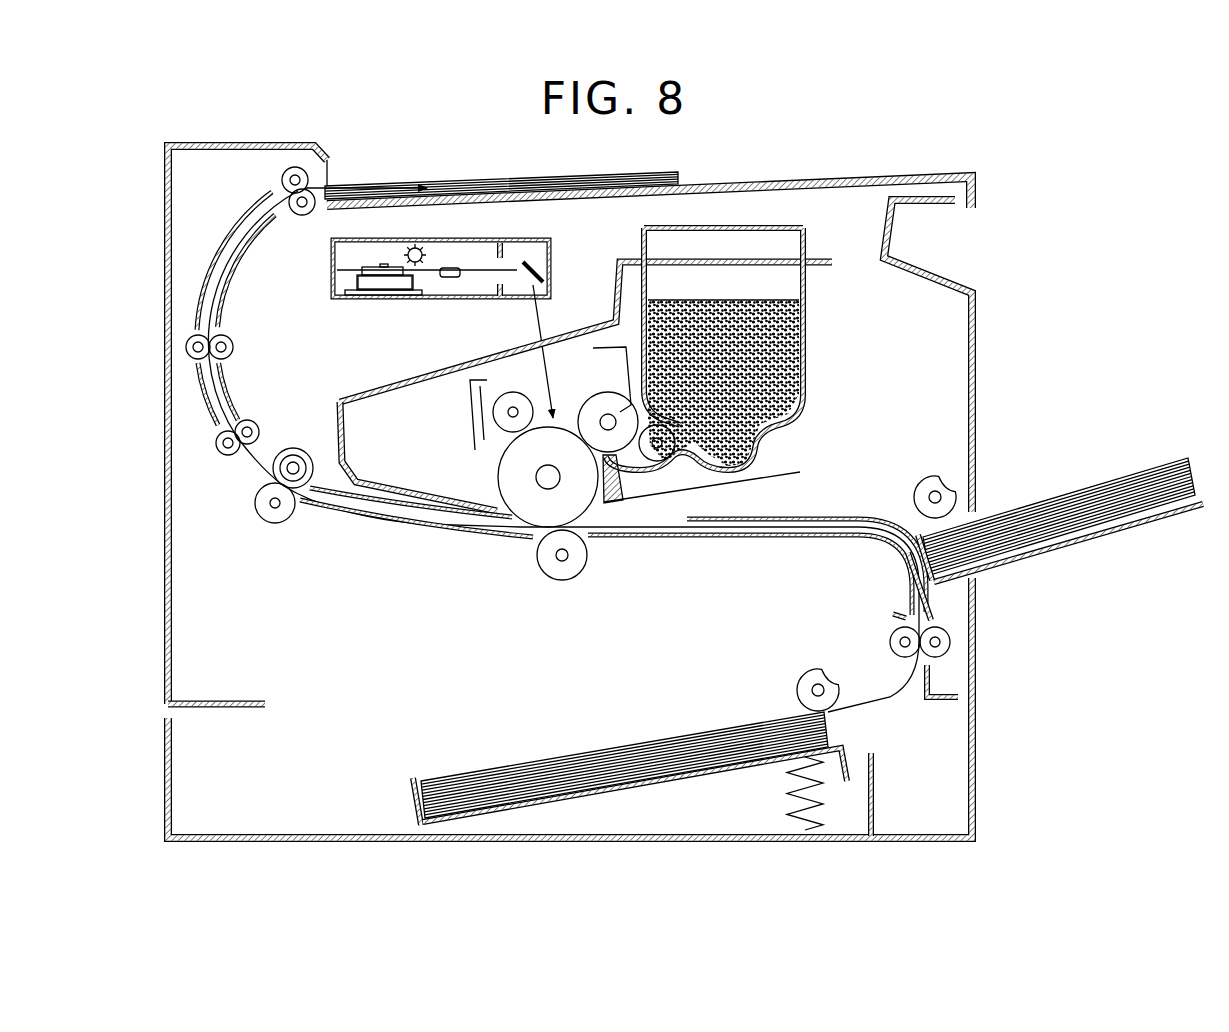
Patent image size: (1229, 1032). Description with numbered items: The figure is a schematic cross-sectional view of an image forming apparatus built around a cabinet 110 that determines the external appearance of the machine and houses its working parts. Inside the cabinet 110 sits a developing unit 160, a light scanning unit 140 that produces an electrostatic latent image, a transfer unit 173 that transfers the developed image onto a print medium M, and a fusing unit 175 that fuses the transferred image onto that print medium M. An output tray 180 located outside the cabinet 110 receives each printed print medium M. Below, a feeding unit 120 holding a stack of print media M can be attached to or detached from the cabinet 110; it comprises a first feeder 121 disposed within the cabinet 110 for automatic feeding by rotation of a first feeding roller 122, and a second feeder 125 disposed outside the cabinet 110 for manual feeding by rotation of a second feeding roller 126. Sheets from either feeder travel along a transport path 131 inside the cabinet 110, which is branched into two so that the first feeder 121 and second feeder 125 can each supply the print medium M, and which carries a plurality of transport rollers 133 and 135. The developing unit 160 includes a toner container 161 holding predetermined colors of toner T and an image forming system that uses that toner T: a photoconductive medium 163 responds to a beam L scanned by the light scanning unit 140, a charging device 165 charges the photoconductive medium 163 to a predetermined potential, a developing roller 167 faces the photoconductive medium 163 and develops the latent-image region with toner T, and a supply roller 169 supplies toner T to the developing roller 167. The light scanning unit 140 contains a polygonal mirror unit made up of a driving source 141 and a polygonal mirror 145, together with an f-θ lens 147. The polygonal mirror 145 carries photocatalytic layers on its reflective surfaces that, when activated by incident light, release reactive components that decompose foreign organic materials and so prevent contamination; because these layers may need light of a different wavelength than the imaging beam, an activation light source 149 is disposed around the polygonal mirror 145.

The cabinet 110 is at (976, 326).
The output tray 180 is at (858, 176).
The light scanning unit 140 is at (404, 266).
The driving source 141 is at (385, 290).
The polygonal mirror 145 is at (357, 270).
The f-θ lens 147 is at (446, 280).
The activation light source 149 is at (418, 249).
The beam L is at (533, 323).
The developing unit 160 is at (622, 369).
The toner container 161 is at (808, 294).
The toner T is at (782, 333).
The photoconductive medium 163 is at (523, 505).
The charging device 165 is at (518, 402).
The developing roller 167 is at (603, 405).
The supply roller 169 is at (659, 462).
The transfer unit 173 is at (555, 572).
The fusing unit 175 is at (297, 448).
The transport path 131 is at (212, 405).
The transport roller 133 is at (889, 642).
The transport roller 135 is at (300, 216).
The feeding unit 120 is at (784, 687).
The first feeder 121 is at (853, 753).
The first feeding roller 122 is at (800, 680).
The second feeder 125 is at (1050, 545).
The second feeding roller 126 is at (938, 482).
The print medium M is at (1128, 475).